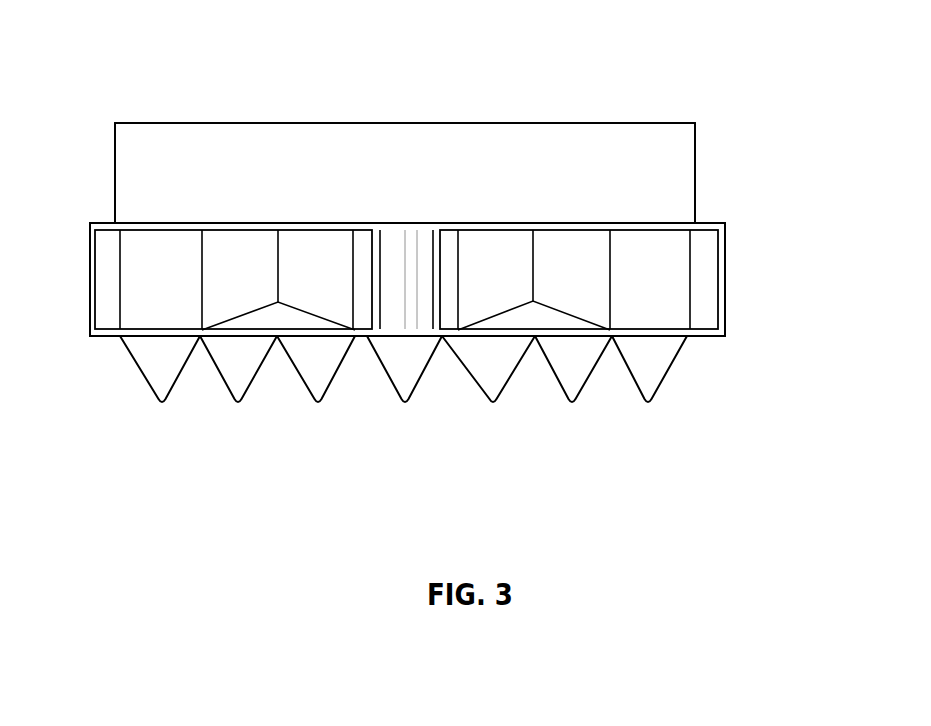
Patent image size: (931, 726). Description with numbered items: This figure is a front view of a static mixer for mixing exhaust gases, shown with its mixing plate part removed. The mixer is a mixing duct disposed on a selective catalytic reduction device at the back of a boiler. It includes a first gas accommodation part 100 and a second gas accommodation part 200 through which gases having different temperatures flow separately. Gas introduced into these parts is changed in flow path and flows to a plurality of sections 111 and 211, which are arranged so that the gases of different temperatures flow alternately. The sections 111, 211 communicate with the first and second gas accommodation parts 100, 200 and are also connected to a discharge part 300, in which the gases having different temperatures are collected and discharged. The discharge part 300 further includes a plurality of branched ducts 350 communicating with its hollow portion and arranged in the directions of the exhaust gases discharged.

The first gas accommodation part 100 is at (372, 107).
The second gas accommodation part 200 is at (521, 109).
The discharge part 300 is at (733, 256).
The branched ducts 350 is at (100, 222).
The sections 111 is at (147, 313).
The sections 211 is at (310, 290).